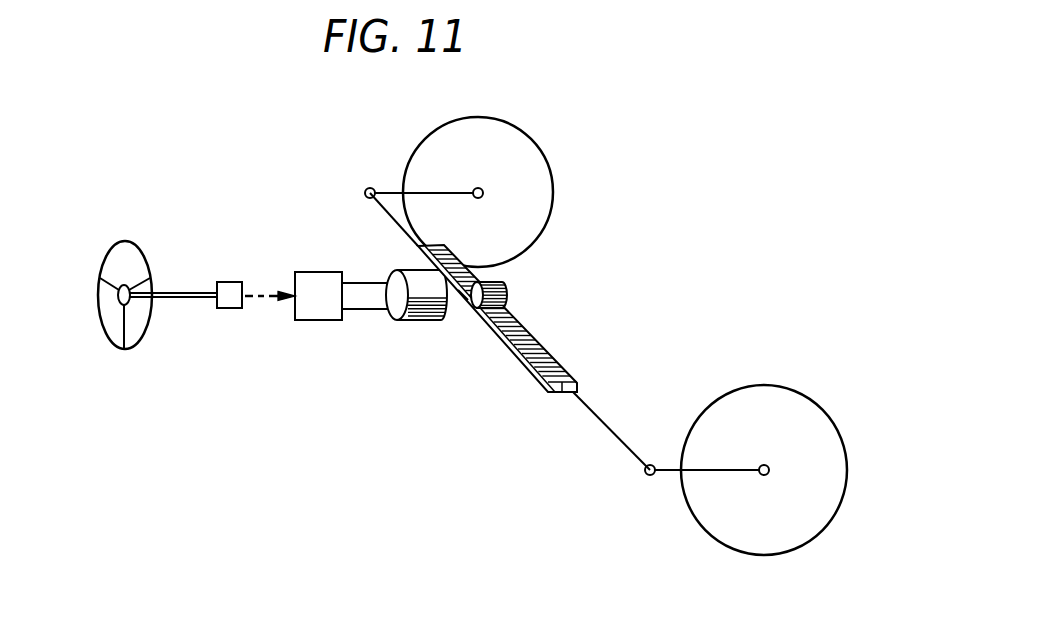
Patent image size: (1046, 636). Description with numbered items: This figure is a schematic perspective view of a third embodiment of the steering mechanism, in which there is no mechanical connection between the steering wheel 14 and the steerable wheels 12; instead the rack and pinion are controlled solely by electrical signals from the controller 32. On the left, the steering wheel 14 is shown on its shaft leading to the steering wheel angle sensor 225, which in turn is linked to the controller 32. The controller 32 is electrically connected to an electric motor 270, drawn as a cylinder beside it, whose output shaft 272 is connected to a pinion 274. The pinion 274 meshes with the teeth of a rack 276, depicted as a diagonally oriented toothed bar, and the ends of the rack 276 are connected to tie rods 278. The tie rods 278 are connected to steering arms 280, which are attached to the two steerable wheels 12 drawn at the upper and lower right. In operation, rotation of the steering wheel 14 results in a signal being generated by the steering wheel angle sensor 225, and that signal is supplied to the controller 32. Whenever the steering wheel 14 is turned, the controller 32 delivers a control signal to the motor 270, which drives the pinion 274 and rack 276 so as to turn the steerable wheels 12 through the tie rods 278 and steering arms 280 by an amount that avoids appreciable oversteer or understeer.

The steerable wheels 12 is at (533, 140).
The steering wheel 14 is at (107, 340).
The controller 32 is at (317, 320).
The steering wheel angle sensor 225 is at (225, 308).
The electric motor 270 is at (420, 323).
The output shaft 272 is at (460, 300).
The pinion 274 is at (507, 294).
The rack 276 is at (552, 353).
The tie rods 278 is at (602, 420).
The steering arms 280 is at (390, 188).